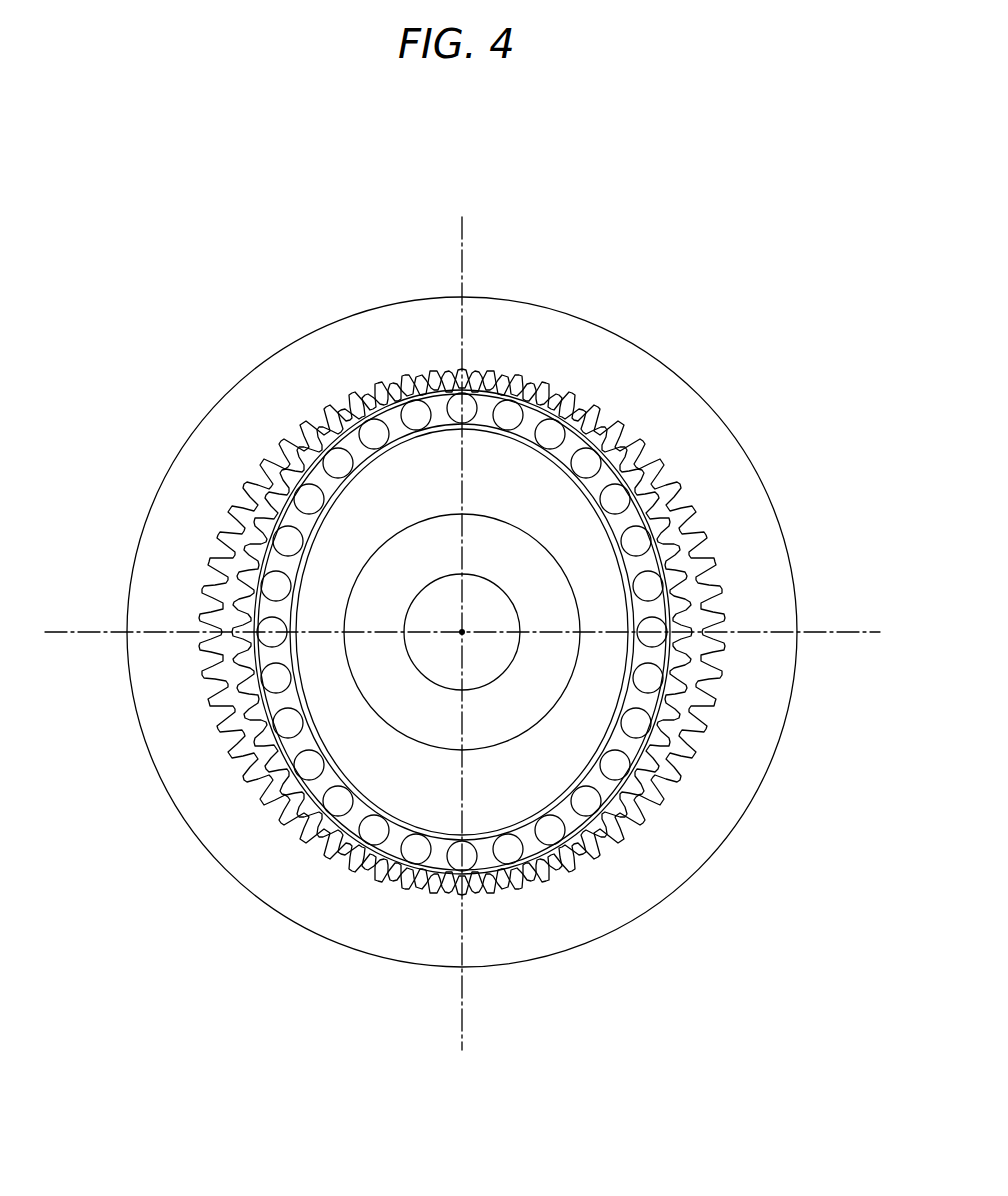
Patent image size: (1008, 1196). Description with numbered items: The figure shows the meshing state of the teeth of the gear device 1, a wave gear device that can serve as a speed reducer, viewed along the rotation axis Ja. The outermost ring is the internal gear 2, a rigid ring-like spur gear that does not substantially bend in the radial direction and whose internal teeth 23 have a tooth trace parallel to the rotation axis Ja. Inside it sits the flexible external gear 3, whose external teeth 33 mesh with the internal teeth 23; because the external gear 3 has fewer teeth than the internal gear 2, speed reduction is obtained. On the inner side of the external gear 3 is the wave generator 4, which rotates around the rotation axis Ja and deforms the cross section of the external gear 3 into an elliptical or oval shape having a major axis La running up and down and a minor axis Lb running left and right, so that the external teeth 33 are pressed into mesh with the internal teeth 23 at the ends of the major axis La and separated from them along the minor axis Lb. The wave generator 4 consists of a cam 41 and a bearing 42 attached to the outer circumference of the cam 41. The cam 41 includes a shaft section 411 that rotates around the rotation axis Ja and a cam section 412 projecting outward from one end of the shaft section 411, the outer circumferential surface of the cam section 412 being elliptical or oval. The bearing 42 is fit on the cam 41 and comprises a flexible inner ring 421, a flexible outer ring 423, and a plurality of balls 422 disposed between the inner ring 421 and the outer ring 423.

The gear device 1 is at (695, 167).
The internal gear 2 is at (480, 622).
The internal teeth 23 is at (705, 710).
The external gear 3 is at (530, 632).
The external teeth 33 is at (683, 745).
The wave generator 4 is at (382, 710).
The cam 41 is at (316, 686).
The shaft section 411 is at (367, 708).
The cam section 412 is at (377, 768).
The bearing 42 is at (484, 710).
The inner ring 421 is at (580, 830).
The balls 422 is at (550, 840).
The outer ring 423 is at (530, 884).
The major axis La is at (463, 260).
The minor axis Lb is at (843, 640).
The rotation axis Ja is at (461, 631).